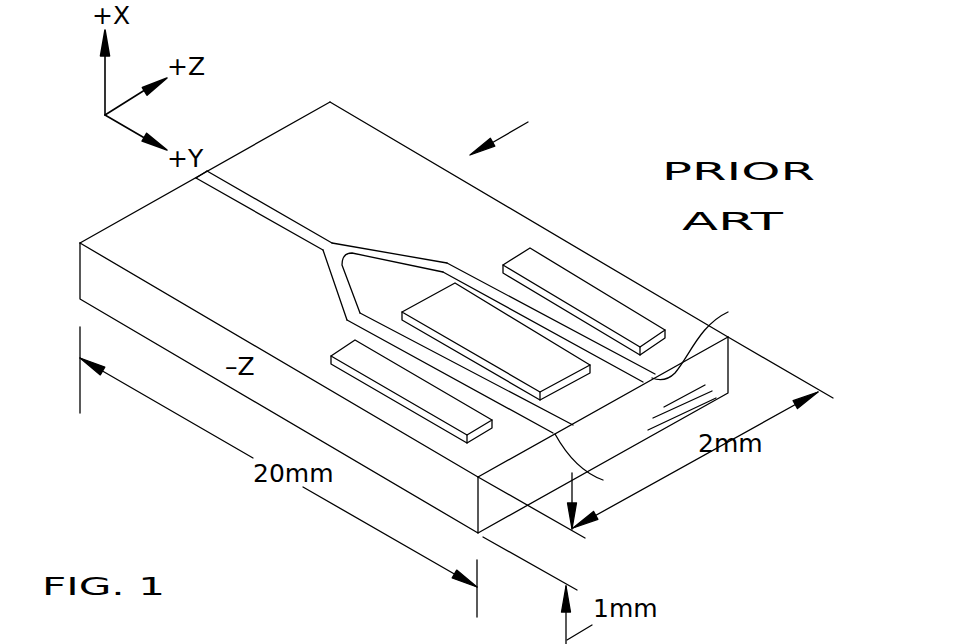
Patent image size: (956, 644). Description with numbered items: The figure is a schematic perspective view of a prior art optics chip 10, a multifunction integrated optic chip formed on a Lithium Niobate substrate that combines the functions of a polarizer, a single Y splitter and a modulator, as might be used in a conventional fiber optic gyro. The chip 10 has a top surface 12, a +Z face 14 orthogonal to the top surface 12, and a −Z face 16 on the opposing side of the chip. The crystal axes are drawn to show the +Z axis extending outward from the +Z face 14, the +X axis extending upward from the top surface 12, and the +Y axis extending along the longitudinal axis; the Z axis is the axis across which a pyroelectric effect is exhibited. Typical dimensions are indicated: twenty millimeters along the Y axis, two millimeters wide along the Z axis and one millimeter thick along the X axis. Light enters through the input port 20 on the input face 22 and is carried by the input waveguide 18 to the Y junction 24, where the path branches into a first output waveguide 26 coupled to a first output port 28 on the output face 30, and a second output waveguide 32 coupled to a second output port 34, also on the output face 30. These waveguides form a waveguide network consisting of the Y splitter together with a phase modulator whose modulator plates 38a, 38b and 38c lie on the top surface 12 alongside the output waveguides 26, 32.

The optics chip 10 is at (520, 129).
The top surface 12 is at (221, 265).
The +Z face 14 is at (522, 215).
The −Z face 16 is at (182, 336).
The input waveguide 18 is at (233, 187).
The input port 20 is at (200, 172).
The input face 22 is at (110, 226).
The Y junction 24 is at (332, 243).
The first output waveguide 26 is at (493, 282).
The first output port 28 is at (708, 337).
The output face 30 is at (622, 435).
The second output waveguide 32 is at (347, 300).
The second output port 34 is at (596, 466).
The modulator plate 38a is at (411, 391).
The modulator plate 38b is at (496, 341).
The modulator plate 38c is at (584, 301).